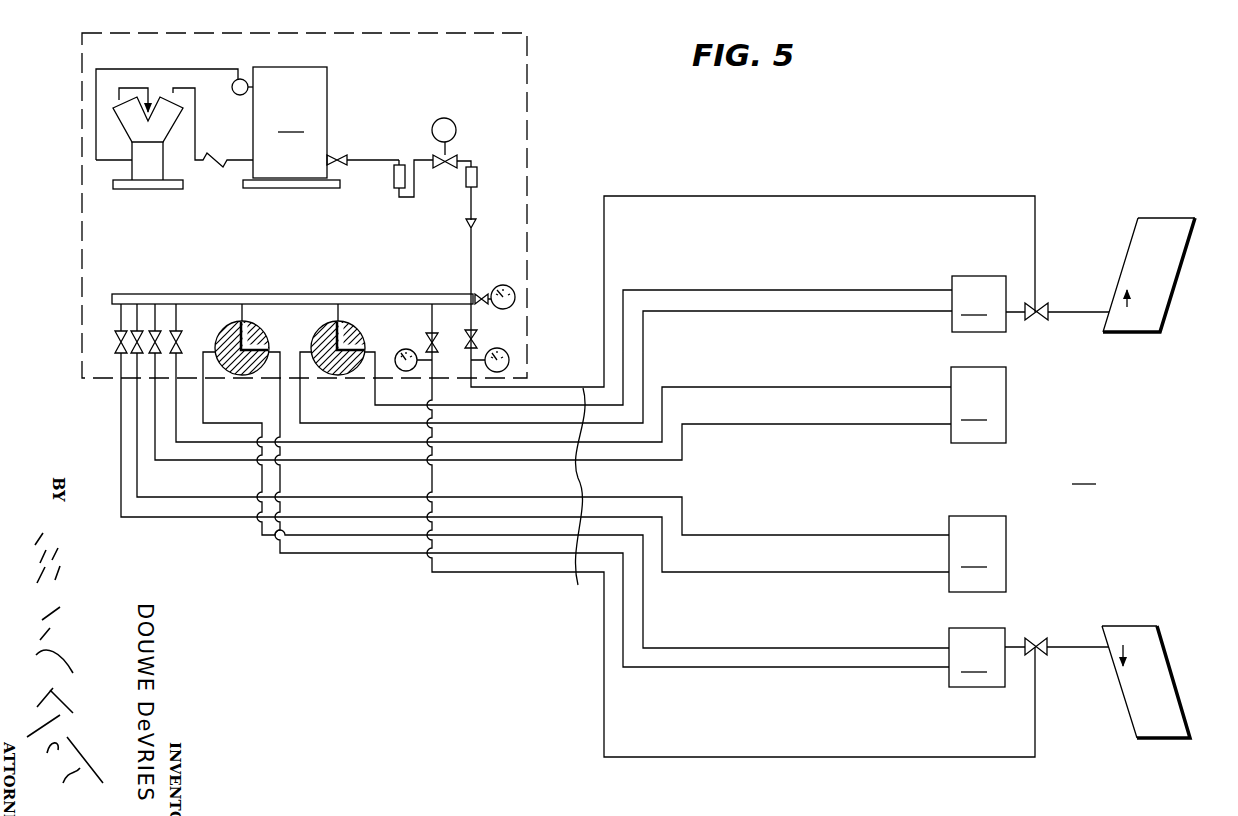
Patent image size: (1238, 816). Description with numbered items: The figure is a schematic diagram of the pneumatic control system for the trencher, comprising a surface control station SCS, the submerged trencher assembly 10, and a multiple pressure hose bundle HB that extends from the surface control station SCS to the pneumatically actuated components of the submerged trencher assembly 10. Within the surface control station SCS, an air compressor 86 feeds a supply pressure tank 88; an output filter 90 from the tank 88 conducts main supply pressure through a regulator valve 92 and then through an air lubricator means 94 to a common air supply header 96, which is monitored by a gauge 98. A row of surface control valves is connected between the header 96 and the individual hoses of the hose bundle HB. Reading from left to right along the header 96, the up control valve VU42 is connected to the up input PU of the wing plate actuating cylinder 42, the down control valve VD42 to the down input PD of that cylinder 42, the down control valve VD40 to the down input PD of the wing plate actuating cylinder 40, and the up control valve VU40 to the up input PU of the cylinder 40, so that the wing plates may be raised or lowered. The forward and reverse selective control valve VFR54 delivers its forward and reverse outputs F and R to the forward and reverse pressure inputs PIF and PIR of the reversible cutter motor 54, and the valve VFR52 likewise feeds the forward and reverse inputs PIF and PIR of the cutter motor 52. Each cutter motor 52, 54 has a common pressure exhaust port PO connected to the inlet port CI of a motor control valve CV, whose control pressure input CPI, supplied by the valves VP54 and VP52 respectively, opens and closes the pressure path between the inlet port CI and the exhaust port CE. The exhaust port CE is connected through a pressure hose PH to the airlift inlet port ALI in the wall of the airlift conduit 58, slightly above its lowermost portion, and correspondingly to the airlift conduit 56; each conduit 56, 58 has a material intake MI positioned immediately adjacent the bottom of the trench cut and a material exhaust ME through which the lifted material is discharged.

The submerged trencher assembly 10 is at (1086, 472).
The wing plate actuating cylinder 40 is at (978, 405).
The wing plate actuating cylinder 42 is at (977, 554).
The cutter motor 52 is at (979, 304).
The cutter motor 54 is at (977, 657).
The airlift conduit 56 is at (1190, 248).
The airlift conduit 58 is at (1165, 680).
The air compressor 86 is at (150, 170).
The supply pressure tank 88 is at (321, 127).
The output filter 90 is at (394, 180).
The regulator valve 92 is at (455, 158).
The air lubricator means 94 is at (478, 178).
The common air supply header 96 is at (292, 292).
The gauge 98 is at (515, 299).
The surface control station SCS is at (528, 118).
The multiple pressure hose bundle HB is at (579, 478).
The forward and reverse selective control valve (54) VFR54 is at (237, 325).
The forward and reverse selective control valve (52) VFR52 is at (346, 325).
The control valve pressure supply valve (54) VP54 is at (427, 340).
The control valve pressure supply valve (52) VP52 is at (478, 338).
The up control valve (42) VU42 is at (116, 340).
The down control valve (42) VD42 is at (137, 354).
The down control valve (40) VD40 is at (156, 354).
The up control valve (40) VU40 is at (176, 354).
The control pressure input CPI is at (1036, 212).
The motor control valve CV is at (1032, 323).
The exhaust port CE is at (1047, 308).
The inlet port CI is at (1008, 697).
The pressure exhaust port PO is at (1016, 310).
The pressure hose PH is at (1108, 311).
The airlift inlet port ALI is at (1107, 305).
The material intake MI is at (1140, 333).
The material exhaust ME is at (1145, 218).
The forward pressure input PIF is at (855, 290).
The reverse pressure input PIR is at (850, 313).
The up pressure input PU is at (878, 387).
The down pressure input PD is at (878, 424).
The reverse output R is at (252, 339).
The forward output F is at (324, 339).